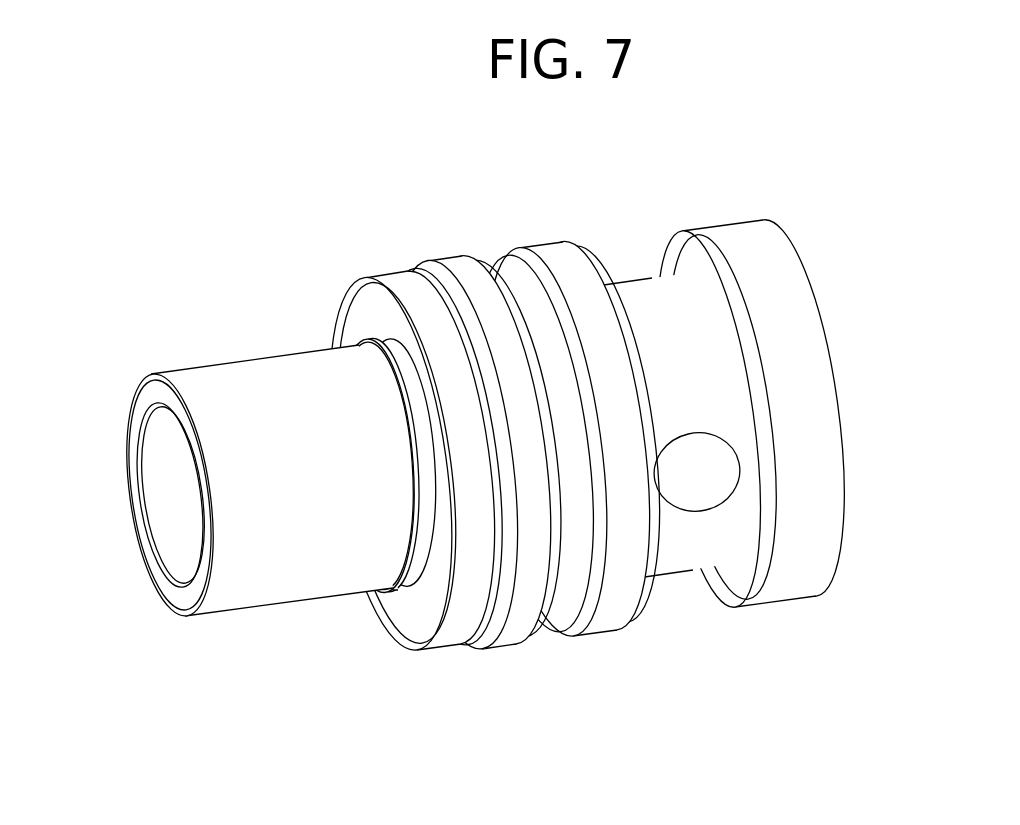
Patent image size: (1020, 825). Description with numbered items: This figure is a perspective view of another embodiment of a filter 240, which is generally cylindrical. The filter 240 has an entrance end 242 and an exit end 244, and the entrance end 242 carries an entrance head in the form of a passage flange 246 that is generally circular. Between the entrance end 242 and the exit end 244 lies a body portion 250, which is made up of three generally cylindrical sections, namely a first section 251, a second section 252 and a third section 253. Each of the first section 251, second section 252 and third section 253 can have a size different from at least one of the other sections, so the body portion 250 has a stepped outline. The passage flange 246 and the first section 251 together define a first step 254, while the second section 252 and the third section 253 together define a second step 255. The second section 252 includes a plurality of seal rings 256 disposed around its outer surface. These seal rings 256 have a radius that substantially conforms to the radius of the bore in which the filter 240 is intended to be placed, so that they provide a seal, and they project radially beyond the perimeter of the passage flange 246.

The filter 240 is at (200, 276).
The entrance end 242 is at (815, 303).
The exit end 244 is at (173, 597).
The passage flange 246 is at (740, 237).
The body portion 250 is at (375, 255).
The first section 251 is at (668, 560).
The second section 252 is at (552, 622).
The third section 253 is at (270, 583).
The first step 254 is at (735, 582).
The second step 255 is at (398, 617).
The seal rings 256 is at (453, 262).